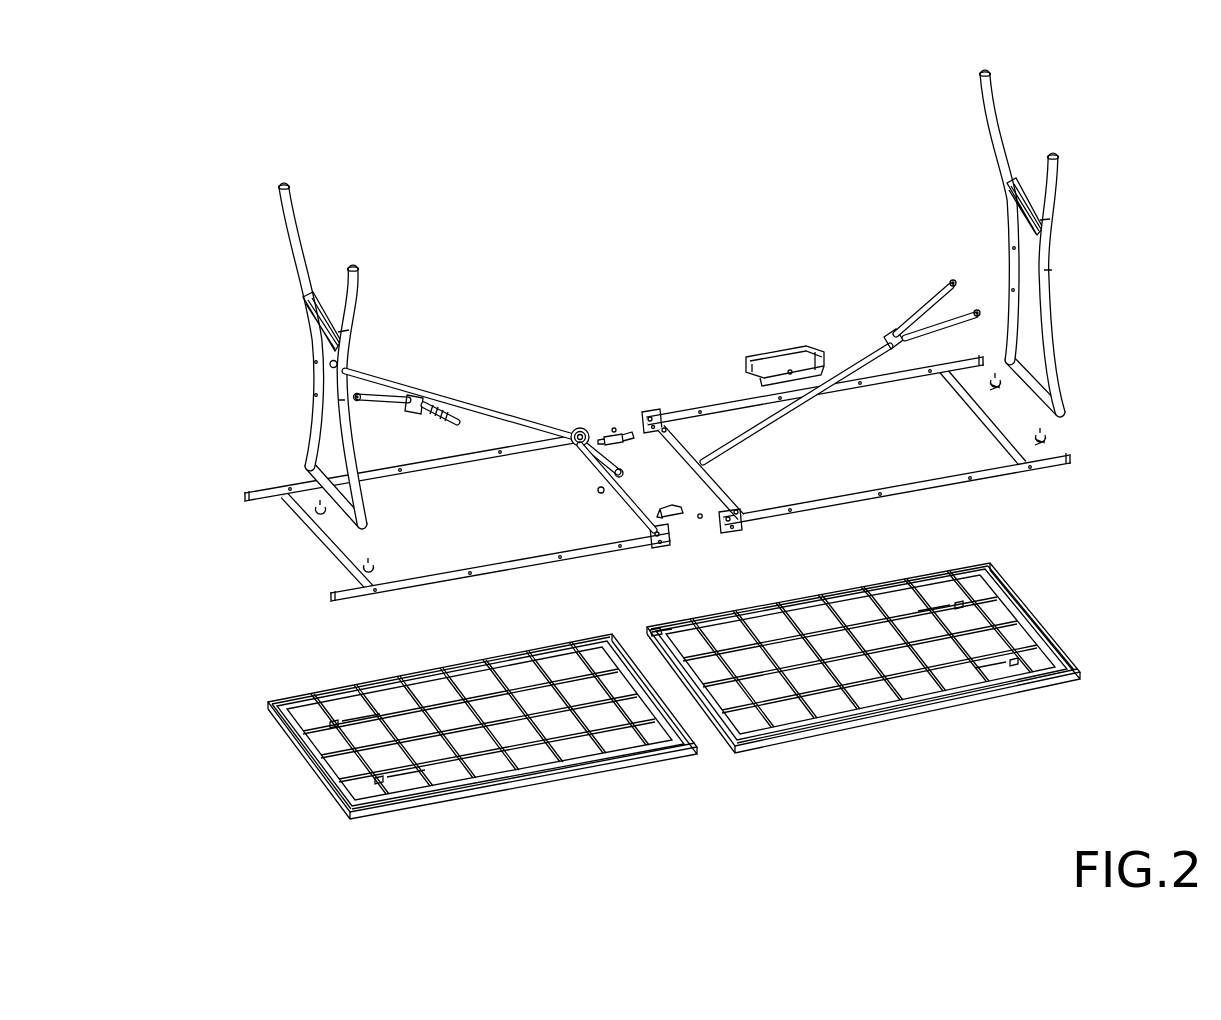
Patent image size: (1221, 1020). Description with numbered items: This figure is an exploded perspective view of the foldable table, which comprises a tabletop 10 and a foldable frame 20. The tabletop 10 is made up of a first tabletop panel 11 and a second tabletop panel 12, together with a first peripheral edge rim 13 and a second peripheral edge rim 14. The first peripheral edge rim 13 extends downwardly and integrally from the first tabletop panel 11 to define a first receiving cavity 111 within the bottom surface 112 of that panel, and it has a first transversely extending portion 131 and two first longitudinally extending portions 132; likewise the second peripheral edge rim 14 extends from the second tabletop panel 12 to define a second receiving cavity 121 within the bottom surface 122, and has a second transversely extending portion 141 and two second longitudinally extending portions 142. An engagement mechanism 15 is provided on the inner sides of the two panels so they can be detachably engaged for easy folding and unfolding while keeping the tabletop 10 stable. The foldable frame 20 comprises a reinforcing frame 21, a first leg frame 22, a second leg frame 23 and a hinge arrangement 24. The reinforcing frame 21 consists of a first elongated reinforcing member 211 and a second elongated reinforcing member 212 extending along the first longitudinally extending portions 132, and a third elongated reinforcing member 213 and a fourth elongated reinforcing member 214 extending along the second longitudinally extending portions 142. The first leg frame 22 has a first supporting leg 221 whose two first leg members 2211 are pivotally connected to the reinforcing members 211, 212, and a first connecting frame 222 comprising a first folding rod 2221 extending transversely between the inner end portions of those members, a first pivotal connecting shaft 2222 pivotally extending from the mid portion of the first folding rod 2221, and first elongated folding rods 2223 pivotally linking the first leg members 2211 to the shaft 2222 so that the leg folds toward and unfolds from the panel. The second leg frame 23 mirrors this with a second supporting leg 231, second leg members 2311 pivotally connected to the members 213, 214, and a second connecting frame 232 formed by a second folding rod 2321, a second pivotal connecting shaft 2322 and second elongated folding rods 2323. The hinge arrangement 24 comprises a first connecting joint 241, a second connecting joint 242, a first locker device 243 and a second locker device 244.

The tabletop 10 is at (1061, 713).
The first tabletop panel 11 is at (500, 763).
The first receiving cavity 111 is at (426, 697).
The bottom surface 112 is at (372, 758).
The second tabletop panel 12 is at (950, 686).
The second receiving cavity 121 is at (850, 605).
The bottom surface 122 is at (929, 708).
The first peripheral edge rim 13 is at (406, 810).
The first transversely extending portion 131 is at (281, 740).
The first longitudinally extending portions 132 is at (298, 690).
The second peripheral edge rim 14 is at (886, 725).
The second transversely extending portion 141 is at (1066, 638).
The second longitudinally extending portions 142 is at (909, 568).
The engagement mechanism 15 is at (723, 758).
The foldable frame 20 is at (825, 262).
The reinforcing frame 21 is at (1076, 487).
The first elongated reinforcing member 211 is at (385, 480).
The second elongated reinforcing member 212 is at (503, 560).
The third elongated reinforcing member 213 is at (707, 415).
The fourth elongated reinforcing member 214 is at (990, 485).
The first leg frame 22 is at (390, 100).
The first supporting leg 221 is at (335, 225).
The first leg members 2211 is at (282, 200).
The first connecting frame 222 is at (459, 393).
The first folding rod 2221 is at (628, 500).
The first pivotal connecting shaft 2222 is at (446, 430).
The first elongated folding rods 2223 is at (356, 393).
The second leg frame 23 is at (1037, 130).
The second supporting leg 231 is at (1080, 226).
The second leg members 2311 is at (985, 90).
The second connecting frame 232 is at (858, 336).
The second folding rod 2321 is at (722, 490).
The second pivotal connecting shaft 2322 is at (796, 410).
The second elongated folding rods 2323 is at (935, 300).
The hinge arrangement 24 is at (433, 371).
The first connecting joint 241 is at (589, 410).
The second connecting joint 242 is at (734, 557).
The first locker device 243 is at (628, 410).
The second locker device 244 is at (685, 534).